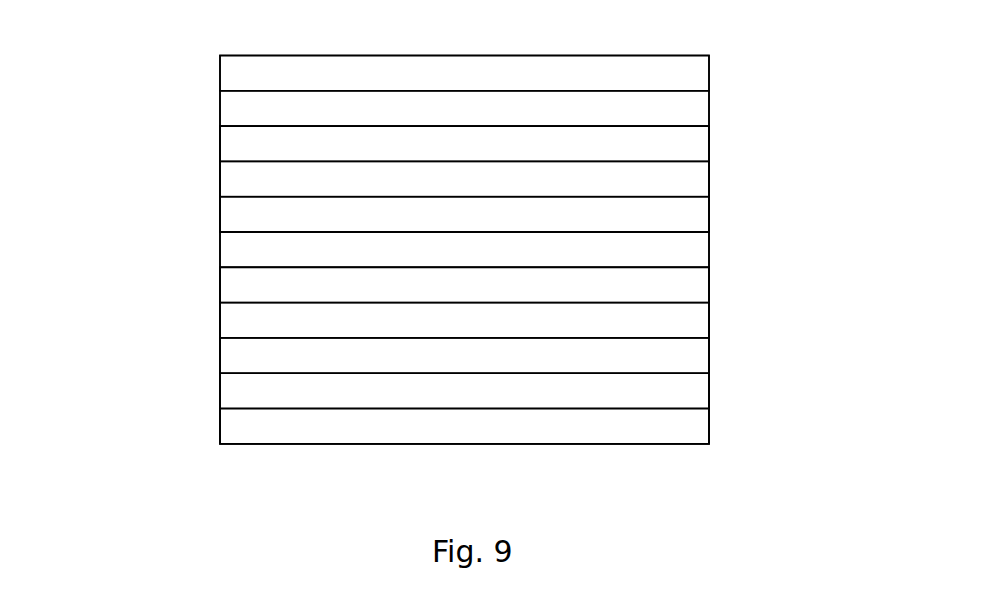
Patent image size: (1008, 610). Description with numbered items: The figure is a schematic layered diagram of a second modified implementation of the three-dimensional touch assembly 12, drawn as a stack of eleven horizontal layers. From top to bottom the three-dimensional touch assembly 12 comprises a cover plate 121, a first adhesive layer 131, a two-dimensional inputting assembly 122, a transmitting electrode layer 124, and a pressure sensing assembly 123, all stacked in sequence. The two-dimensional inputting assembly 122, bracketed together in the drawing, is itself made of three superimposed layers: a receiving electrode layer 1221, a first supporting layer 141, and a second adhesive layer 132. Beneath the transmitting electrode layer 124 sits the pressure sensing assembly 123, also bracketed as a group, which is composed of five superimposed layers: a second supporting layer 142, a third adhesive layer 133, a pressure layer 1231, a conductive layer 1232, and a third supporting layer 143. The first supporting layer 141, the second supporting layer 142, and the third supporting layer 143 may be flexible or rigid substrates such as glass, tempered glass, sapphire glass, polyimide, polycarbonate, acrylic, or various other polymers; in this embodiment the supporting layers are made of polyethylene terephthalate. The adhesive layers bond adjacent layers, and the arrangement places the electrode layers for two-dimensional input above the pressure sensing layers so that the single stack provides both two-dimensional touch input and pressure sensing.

The three-dimensional touch assembly 12 is at (483, 24).
The cover plate 121 is at (709, 72).
The first adhesive layer 131 is at (220, 110).
The two-dimensional inputting assembly 122 is at (861, 124).
The receiving electrode layer 1221 is at (709, 143).
The first supporting layer 141 is at (709, 178).
The second adhesive layer 132 is at (709, 214).
The transmitting electrode layer 124 is at (709, 249).
The pressure sensing assembly 123 is at (83, 292).
The second supporting layer 142 is at (220, 287).
The third adhesive layer 133 is at (220, 322).
The pressure layer 1231 is at (220, 357).
The conductive layer 1232 is at (220, 392).
The third supporting layer 143 is at (220, 428).